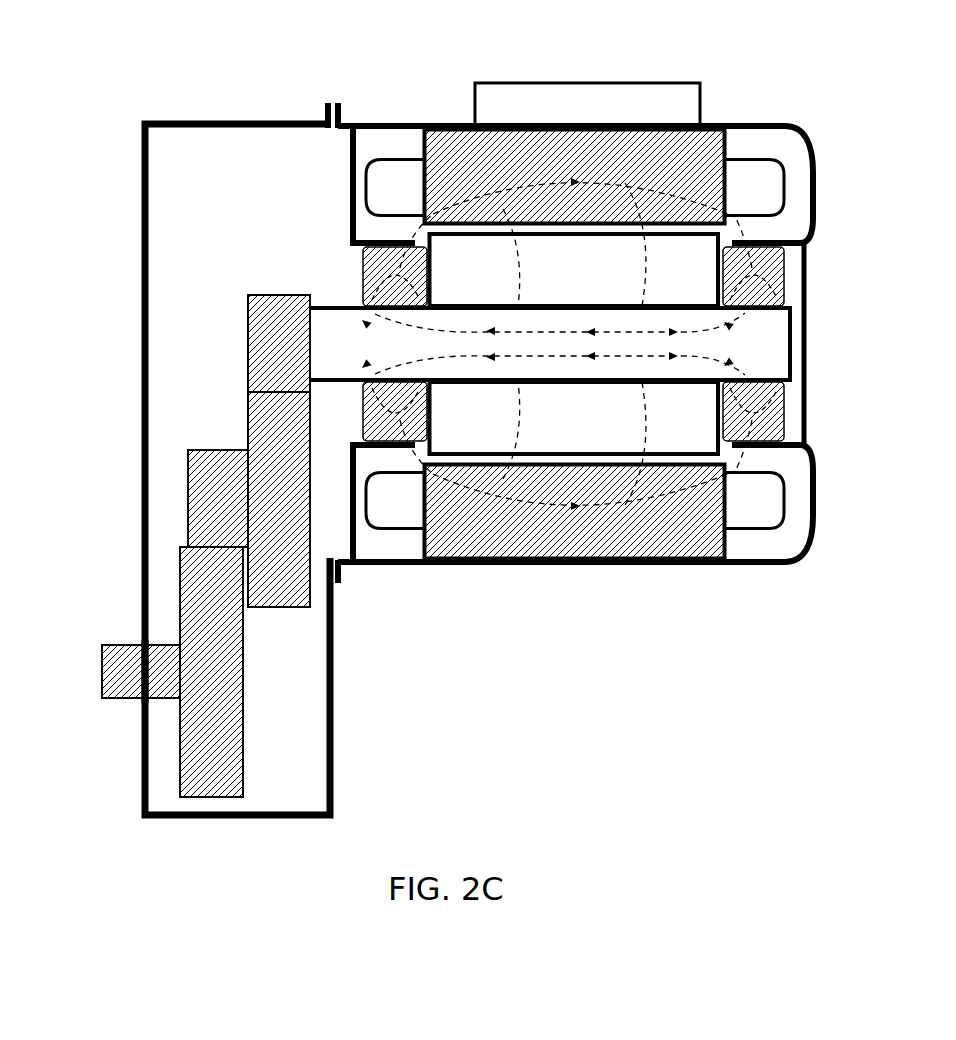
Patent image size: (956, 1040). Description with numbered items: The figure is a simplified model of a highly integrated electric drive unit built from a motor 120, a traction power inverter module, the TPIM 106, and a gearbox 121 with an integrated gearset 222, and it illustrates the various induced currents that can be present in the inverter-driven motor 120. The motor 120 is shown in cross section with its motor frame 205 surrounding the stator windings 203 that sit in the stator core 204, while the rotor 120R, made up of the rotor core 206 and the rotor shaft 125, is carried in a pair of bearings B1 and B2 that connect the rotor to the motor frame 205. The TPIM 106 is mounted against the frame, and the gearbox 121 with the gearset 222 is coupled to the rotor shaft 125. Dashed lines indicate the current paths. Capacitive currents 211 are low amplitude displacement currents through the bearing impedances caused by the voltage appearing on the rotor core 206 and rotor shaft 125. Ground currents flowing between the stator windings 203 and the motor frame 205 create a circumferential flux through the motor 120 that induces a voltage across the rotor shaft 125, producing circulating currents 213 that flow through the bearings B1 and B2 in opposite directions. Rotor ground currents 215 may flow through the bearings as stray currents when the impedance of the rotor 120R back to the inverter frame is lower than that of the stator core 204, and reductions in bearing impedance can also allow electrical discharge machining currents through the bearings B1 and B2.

The gearbox 121 is at (158, 62).
The motor 120 is at (504, 324).
The rotor 120R is at (246, 499).
The integrated gearset 222 is at (156, 475).
The motor frame 205 is at (344, 104).
The TPIM 106 is at (603, 115).
The stator windings 203 is at (408, 159).
The stator core 204 is at (588, 165).
The circulating currents 213 is at (576, 346).
The rotor core 206 is at (590, 283).
The capacitive currents 211 is at (517, 301).
The rotor ground currents 215 is at (360, 372).
The rotor shaft 125 is at (456, 355).
The bearing B1 is at (784, 298).
The bearing B2 is at (363, 437).